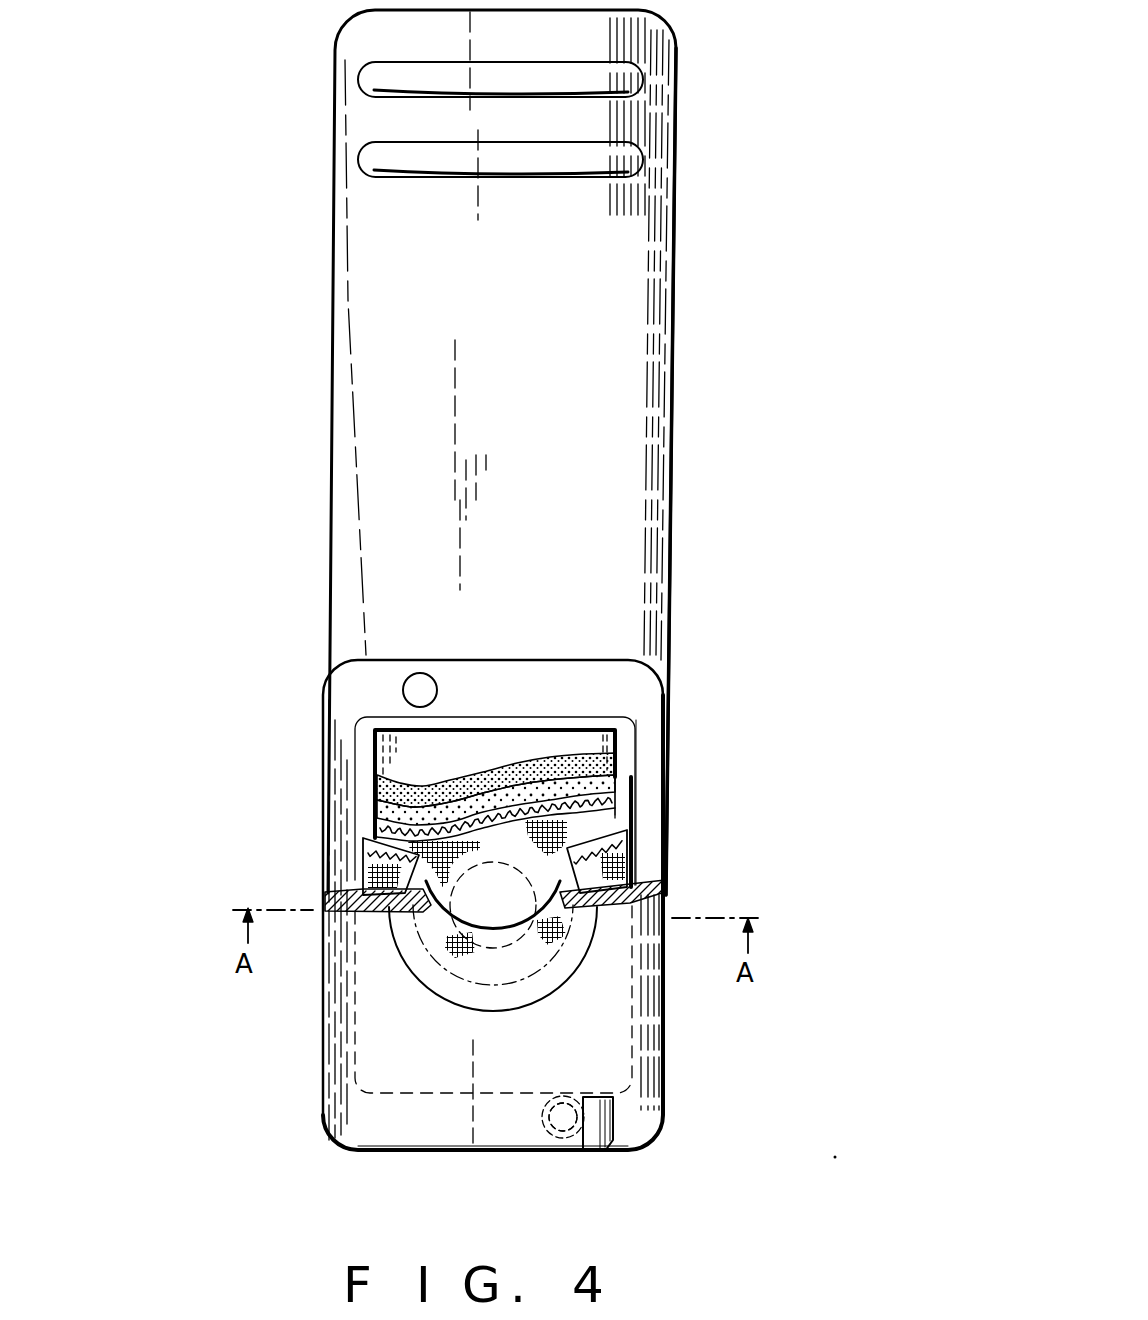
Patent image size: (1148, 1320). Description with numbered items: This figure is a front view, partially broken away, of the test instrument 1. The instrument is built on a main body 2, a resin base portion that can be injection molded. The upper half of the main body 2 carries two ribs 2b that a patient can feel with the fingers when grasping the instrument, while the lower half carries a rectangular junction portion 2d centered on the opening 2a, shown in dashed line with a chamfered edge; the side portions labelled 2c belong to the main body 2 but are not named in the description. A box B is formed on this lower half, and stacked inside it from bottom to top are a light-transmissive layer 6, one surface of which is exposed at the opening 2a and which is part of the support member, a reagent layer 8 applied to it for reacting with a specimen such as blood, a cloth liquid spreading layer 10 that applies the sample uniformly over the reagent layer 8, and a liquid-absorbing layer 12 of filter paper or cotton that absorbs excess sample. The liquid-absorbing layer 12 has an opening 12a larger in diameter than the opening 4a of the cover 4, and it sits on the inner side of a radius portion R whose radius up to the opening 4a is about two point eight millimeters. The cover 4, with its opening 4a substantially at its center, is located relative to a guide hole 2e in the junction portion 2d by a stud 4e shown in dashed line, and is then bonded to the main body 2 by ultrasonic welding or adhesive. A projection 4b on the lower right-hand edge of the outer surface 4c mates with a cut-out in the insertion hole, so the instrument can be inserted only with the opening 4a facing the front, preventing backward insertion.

The test instrument 1 is at (680, 452).
The main body 2 is at (584, 400).
The opening 2a is at (517, 962).
The ribs 2b is at (628, 78).
The side walls of main body 2c is at (325, 832).
The junction portion 2d is at (646, 810).
The guide hole 2e is at (403, 690).
The cover 4 is at (612, 1037).
The opening 4a is at (510, 947).
The projection 4b is at (620, 1140).
The outer surface 4c is at (357, 1112).
The stud 4e is at (553, 1133).
The light-transmissive layer 6 is at (492, 750).
The reagent layer 8 is at (548, 756).
The liquid spreading layer 10 is at (538, 858).
The liquid-absorbing layer 12 is at (600, 858).
The opening 12a is at (633, 870).
The box B is at (623, 753).
The radius portion R is at (428, 967).